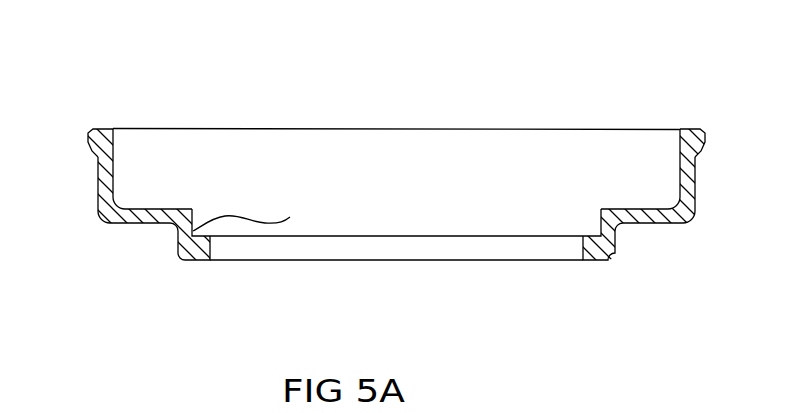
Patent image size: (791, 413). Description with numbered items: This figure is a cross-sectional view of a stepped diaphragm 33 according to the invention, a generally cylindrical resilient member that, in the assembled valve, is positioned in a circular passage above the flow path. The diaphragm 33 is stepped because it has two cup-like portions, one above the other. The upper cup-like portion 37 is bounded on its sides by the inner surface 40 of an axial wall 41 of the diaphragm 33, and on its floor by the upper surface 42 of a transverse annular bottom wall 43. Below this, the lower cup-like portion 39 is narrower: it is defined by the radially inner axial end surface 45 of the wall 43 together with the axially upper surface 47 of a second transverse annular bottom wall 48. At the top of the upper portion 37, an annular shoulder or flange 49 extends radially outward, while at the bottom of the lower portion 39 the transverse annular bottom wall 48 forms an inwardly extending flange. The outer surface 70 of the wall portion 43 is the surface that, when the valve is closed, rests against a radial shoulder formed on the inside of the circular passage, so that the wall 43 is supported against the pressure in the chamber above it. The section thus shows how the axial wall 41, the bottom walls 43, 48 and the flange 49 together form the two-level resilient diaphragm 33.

The diaphragm 33 is at (603, 120).
The upper cup-like portion 37 is at (343, 155).
The lower cup-like portion 39 is at (345, 245).
The inner surface 40 is at (115, 148).
The axial wall 41 is at (94, 155).
The upper surface 42 is at (141, 209).
The transverse annular bottom wall 43 is at (155, 221).
The radially inner axial end surface 45 is at (192, 215).
The axially upper surface 47 is at (290, 217).
The transverse annular bottom wall 48 is at (197, 248).
The annular shoulder or flange 49 is at (105, 129).
The outer surface 70 is at (662, 225).